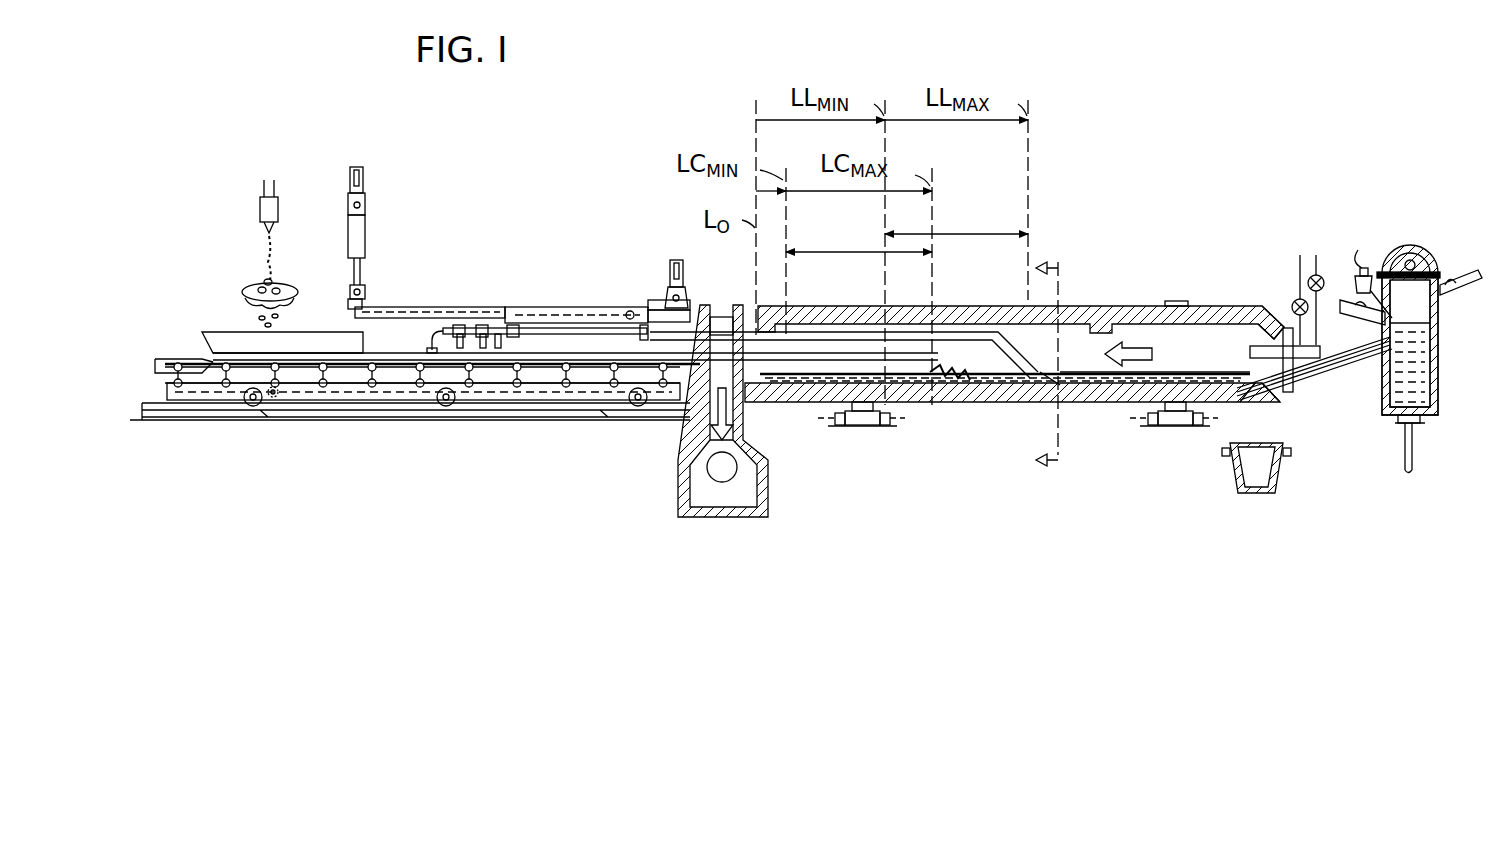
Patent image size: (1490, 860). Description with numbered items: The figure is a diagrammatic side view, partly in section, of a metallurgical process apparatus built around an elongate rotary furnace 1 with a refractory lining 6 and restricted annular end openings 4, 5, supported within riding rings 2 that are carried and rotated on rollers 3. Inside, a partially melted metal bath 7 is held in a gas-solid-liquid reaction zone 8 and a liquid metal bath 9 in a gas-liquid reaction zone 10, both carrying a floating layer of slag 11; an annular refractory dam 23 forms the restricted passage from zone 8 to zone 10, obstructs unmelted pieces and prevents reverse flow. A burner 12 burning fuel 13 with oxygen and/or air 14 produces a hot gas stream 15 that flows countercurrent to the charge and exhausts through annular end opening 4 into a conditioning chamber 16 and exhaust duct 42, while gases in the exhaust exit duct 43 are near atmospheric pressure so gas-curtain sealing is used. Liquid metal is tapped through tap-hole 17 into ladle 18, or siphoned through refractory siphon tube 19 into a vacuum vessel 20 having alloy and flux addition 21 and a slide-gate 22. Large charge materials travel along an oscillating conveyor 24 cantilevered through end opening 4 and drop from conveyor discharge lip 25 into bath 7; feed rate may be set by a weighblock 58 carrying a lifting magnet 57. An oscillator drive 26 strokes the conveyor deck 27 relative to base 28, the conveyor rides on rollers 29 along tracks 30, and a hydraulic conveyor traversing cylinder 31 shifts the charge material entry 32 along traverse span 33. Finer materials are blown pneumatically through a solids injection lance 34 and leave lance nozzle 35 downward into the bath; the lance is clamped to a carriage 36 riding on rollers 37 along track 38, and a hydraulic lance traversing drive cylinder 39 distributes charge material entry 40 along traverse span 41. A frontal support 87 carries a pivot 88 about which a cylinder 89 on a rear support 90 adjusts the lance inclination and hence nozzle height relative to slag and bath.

The elongate rotary furnace 1 is at (1021, 306).
The riding rings 2 is at (1182, 287).
The rollers 3 is at (1159, 432).
The annular end opening 4 is at (745, 347).
The annular end opening 5 is at (1290, 380).
The refractory lining 6 is at (1092, 304).
The partially melted metal bath 7 is at (862, 405).
The gas-solid-liquid reaction zone 8 is at (606, 386).
The liquid metal bath 9 is at (1012, 388).
The gas-liquid reaction zone 10 is at (1215, 395).
The floating layer of slag 11 is at (1098, 378).
The burner 12 is at (1268, 328).
The fuel 13 is at (1314, 275).
The oxygen and/or air 14 is at (1298, 300).
The hot gas stream 15 is at (1145, 348).
The conditioning chamber 16 is at (738, 395).
The tap-hole 17 is at (1262, 400).
The ladle 18 is at (1280, 475).
The refractory siphon tube 19 is at (1360, 370).
The vacuum vessel 20 is at (1438, 352).
The alloy and flux addition 21 is at (1370, 272).
The slide-gate 22 is at (1416, 428).
The annular refractory dam 23 is at (1178, 435).
The oscillating conveyor 24 is at (412, 425).
The conveyor discharge lip 25 is at (830, 395).
The oscillator drive 26 is at (185, 358).
The conveyor deck 27 is at (600, 360).
The base 28 is at (235, 395).
The rollers 29 is at (450, 400).
The tracks 30 is at (422, 408).
The hydraulic conveyor traversing cylinder 31 is at (395, 417).
The charge material entry 32 is at (955, 380).
The traverse span 33 is at (859, 236).
The solids injection lance 34 is at (846, 350).
The lance nozzle 35 is at (843, 342).
The carriage 36 is at (560, 310).
The rollers 37 is at (512, 311).
The track 38 is at (430, 291).
The hydraulic lance traversing drive cylinder 39 is at (372, 309).
The charge material entry 40 is at (1050, 395).
The traverse span 41 is at (956, 218).
The exhaust duct 42 is at (708, 467).
The exhaust exit duct 43 is at (742, 411).
The lifting magnet 57 is at (245, 295).
The weighblock 58 is at (262, 213).
The frontal support 87 is at (670, 264).
The pivot 88 is at (668, 296).
The cylinder 89 is at (366, 225).
The rear support 90 is at (365, 178).